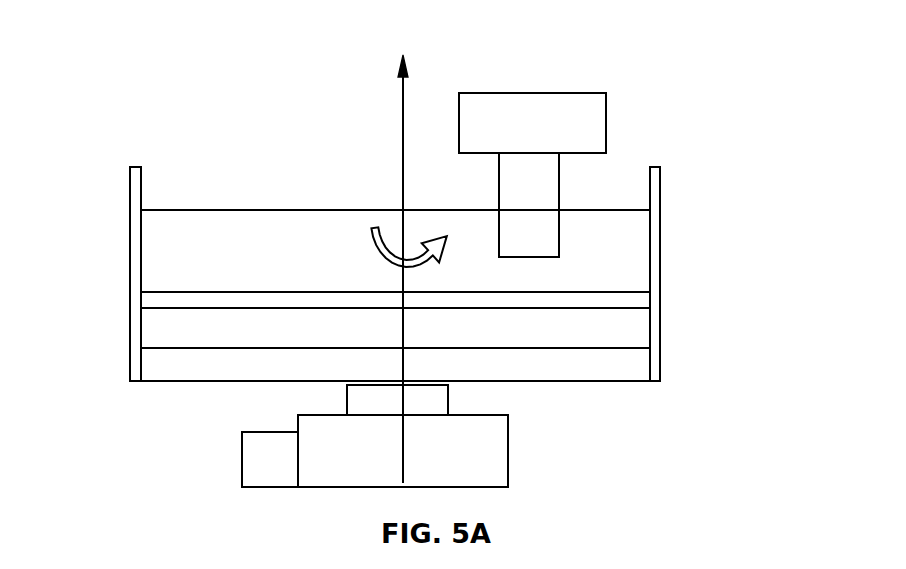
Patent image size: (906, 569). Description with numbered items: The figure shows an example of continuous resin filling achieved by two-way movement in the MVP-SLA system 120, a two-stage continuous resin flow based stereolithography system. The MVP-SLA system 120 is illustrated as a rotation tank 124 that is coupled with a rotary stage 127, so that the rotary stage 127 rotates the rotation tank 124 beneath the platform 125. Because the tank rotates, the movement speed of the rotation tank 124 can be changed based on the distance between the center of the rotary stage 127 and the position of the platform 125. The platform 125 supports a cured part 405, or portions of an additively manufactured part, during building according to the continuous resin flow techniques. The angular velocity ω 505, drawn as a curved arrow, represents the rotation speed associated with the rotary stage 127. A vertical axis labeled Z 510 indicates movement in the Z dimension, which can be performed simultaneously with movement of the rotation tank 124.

The MVP-SLA system 120 is at (644, 54).
The rotation tank 124 is at (136, 183).
The platform 125 is at (525, 93).
The cured part 405 is at (559, 190).
The angular velocity ω 505 is at (435, 262).
The Z 510 is at (401, 103).
The rotary stage 127 is at (508, 445).